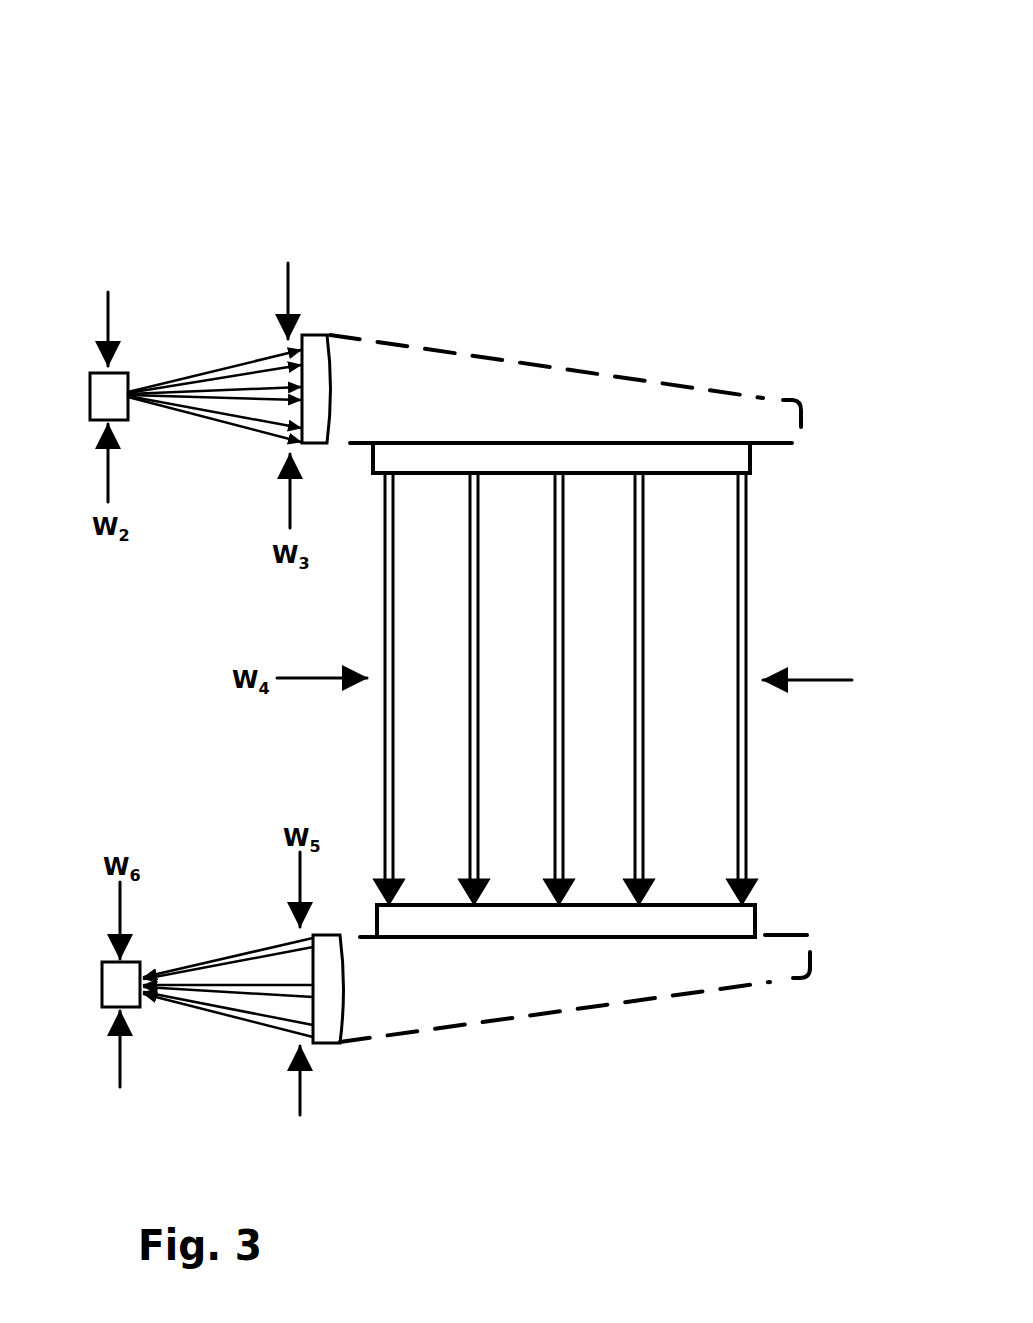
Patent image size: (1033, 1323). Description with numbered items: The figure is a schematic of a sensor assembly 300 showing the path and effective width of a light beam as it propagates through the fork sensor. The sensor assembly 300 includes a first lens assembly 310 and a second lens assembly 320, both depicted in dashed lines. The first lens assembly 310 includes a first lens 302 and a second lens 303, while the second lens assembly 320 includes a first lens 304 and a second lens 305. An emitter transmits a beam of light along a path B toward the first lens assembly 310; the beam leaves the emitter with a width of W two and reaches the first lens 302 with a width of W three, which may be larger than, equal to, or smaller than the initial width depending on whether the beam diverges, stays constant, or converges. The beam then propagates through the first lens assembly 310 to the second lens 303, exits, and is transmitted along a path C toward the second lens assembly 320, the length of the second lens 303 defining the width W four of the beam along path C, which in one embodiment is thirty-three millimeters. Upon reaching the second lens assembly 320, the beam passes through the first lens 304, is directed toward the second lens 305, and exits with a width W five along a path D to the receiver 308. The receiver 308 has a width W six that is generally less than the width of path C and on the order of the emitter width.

The sensor assembly 300 is at (458, 144).
The first lens 302 is at (313, 335).
The second lens 303 is at (753, 457).
The first lens 304 is at (755, 922).
The second lens 305 is at (325, 1043).
The receiver 308 is at (102, 980).
The first lens assembly 310 is at (599, 332).
The second lens assembly 320 is at (601, 1036).
The path B is at (205, 403).
The path C is at (393, 520).
The path D is at (257, 963).